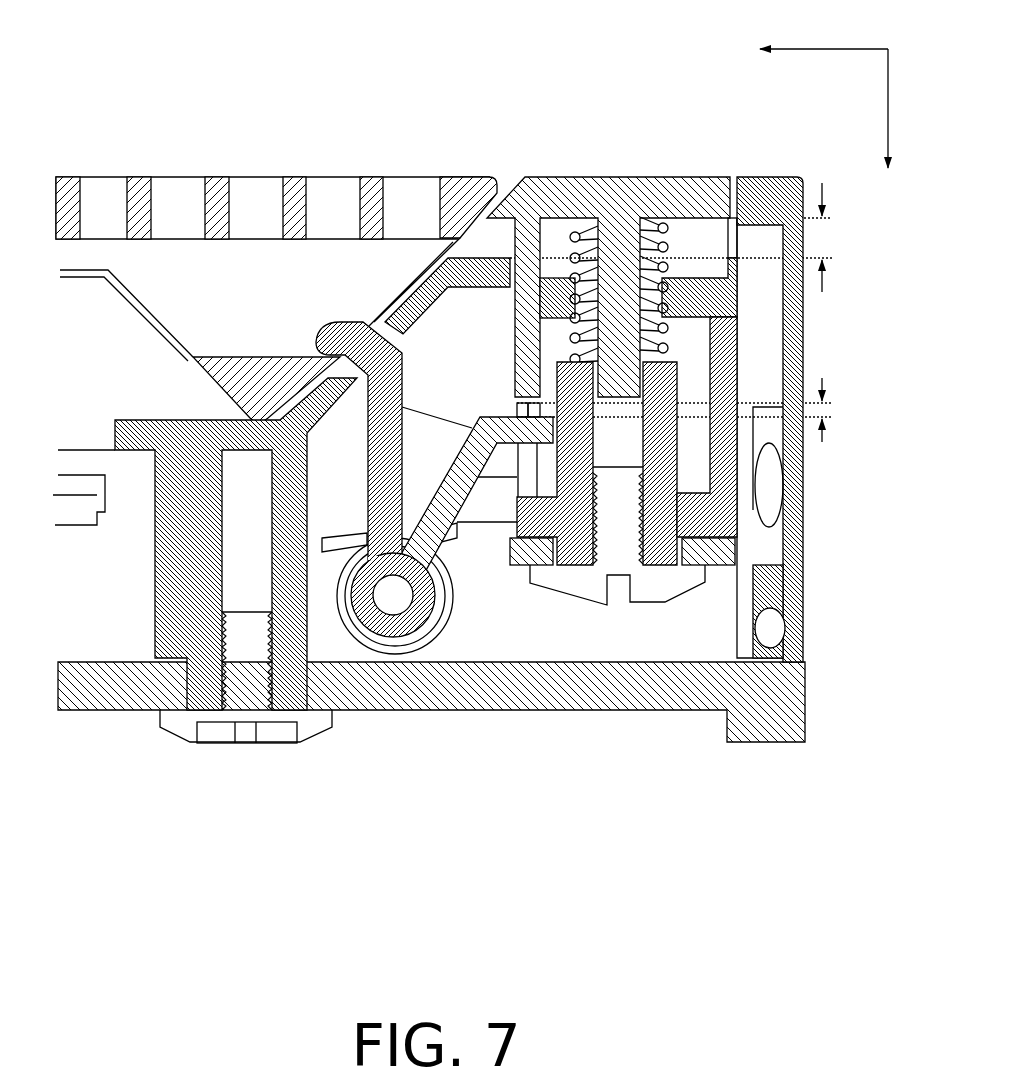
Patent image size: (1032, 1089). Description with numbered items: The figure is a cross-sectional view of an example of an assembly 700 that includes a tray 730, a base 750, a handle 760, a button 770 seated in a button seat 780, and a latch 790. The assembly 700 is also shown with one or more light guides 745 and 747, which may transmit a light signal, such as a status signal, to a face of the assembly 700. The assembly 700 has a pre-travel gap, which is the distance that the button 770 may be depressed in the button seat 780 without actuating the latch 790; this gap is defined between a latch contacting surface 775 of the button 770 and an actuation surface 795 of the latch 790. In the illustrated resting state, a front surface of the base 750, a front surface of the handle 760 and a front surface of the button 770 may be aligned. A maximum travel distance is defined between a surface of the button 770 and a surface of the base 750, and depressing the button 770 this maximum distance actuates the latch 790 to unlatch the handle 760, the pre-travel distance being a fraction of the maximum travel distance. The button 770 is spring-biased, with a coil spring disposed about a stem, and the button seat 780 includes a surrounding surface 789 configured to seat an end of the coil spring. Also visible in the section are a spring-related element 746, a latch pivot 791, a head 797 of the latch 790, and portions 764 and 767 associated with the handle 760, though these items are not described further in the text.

The assembly 700 is at (186, 57).
The tray 730 is at (450, 711).
The light guide 745 is at (787, 496).
The spring 746 is at (655, 331).
The light guide 747 is at (782, 632).
The base 750 is at (146, 404).
The handle 760 is at (292, 177).
The plate flange 764 is at (491, 177).
The funnel 767 is at (300, 357).
The button 770 is at (695, 177).
The latch contacting surface 775 is at (521, 397).
The button seat 780 is at (501, 323).
The surface 789 is at (647, 362).
The latch 790 is at (462, 586).
The pivot pin 791 is at (430, 617).
The actuation surface 795 is at (510, 417).
The lever head 797 is at (385, 472).